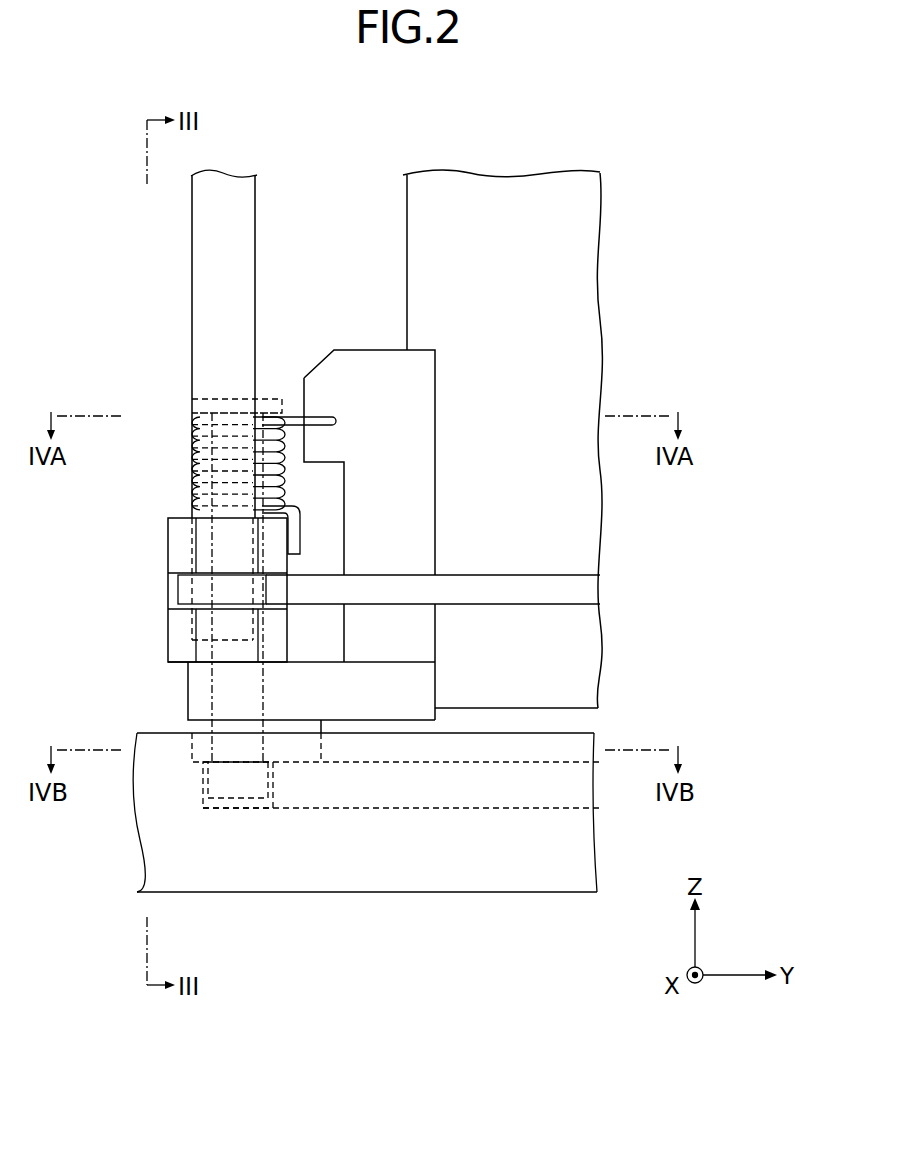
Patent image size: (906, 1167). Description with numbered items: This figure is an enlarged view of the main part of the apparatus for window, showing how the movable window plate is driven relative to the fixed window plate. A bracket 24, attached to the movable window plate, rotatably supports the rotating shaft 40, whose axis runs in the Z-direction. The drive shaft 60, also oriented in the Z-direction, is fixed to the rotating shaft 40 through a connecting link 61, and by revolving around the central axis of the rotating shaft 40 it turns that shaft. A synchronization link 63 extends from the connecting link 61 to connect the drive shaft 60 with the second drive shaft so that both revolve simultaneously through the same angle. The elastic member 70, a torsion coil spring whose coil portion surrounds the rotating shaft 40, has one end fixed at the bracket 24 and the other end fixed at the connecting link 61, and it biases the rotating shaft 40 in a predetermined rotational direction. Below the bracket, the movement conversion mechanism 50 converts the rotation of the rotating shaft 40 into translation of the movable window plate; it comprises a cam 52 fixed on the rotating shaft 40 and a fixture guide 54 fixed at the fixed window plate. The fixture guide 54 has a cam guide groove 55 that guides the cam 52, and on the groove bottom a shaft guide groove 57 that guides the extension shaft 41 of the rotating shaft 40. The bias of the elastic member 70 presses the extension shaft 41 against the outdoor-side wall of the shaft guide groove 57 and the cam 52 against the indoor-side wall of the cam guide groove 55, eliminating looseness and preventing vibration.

The bracket 24 is at (360, 362).
The rotating shaft 40 is at (213, 682).
The extension shaft 41 is at (236, 794).
The movement conversion mechanism 50 is at (365, 865).
The cam 52 is at (203, 728).
The fixture guide 54 is at (388, 867).
The cam guide groove 55 is at (188, 745).
The shaft guide groove 57 is at (249, 804).
The drive shaft 60 is at (210, 262).
The connecting link 61 is at (178, 545).
The synchronization link 63 is at (552, 581).
The elastic member 70 is at (297, 536).